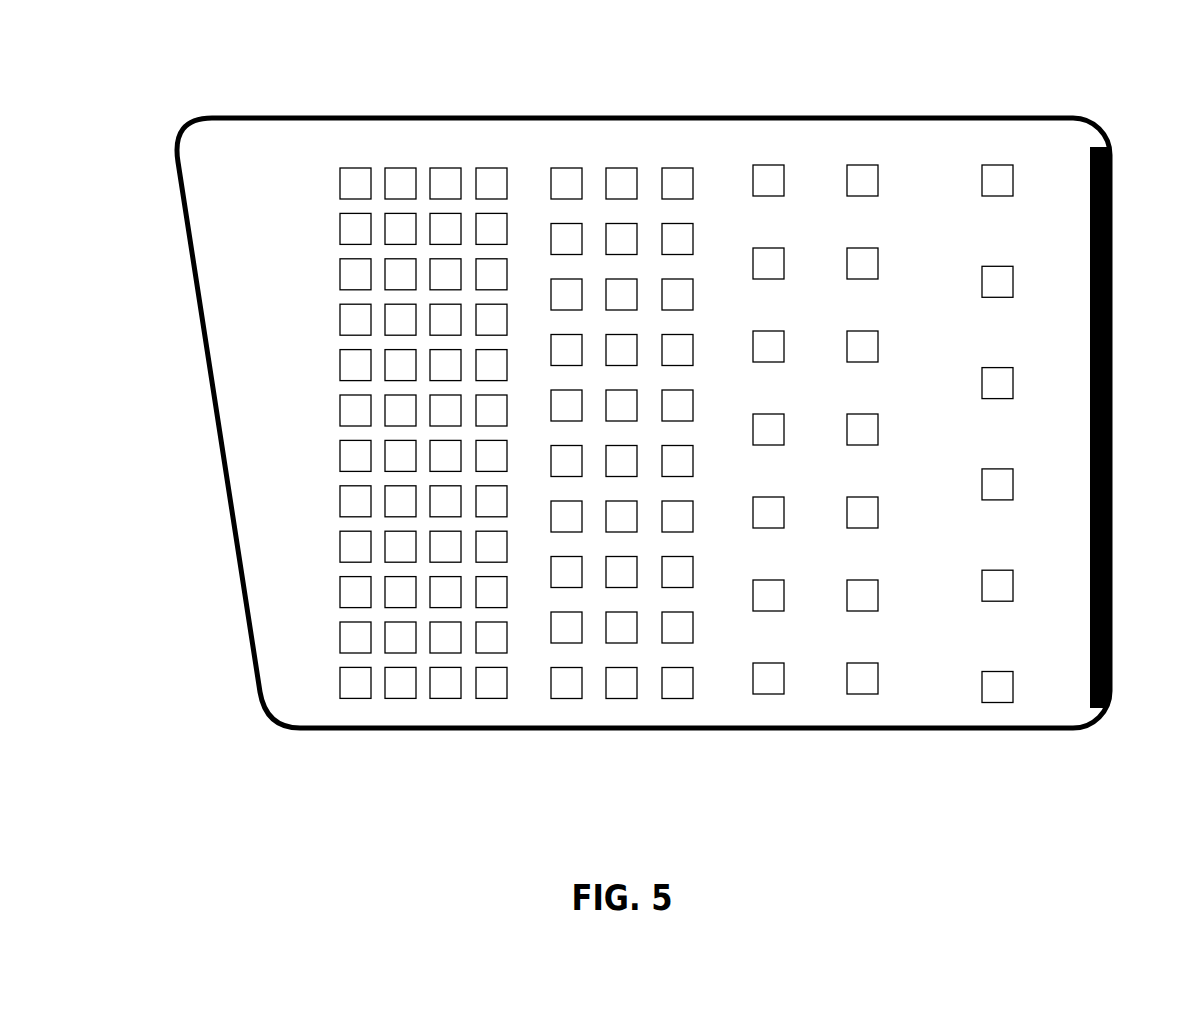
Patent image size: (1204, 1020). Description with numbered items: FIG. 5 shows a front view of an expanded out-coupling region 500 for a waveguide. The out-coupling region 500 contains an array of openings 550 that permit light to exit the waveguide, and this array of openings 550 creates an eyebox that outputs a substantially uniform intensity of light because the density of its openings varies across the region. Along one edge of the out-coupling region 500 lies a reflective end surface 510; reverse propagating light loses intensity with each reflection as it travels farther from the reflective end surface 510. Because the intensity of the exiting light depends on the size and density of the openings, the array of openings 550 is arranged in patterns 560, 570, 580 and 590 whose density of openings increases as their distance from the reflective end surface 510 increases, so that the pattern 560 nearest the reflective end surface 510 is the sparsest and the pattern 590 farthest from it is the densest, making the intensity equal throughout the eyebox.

The out-coupling region 500 is at (227, 756).
The reflective end surface 510 is at (1110, 442).
The array of openings 550 is at (341, 160).
The pattern of openings 560 is at (958, 708).
The pattern of openings 570 is at (734, 708).
The pattern of openings 580 is at (535, 703).
The pattern of openings 590 is at (340, 708).